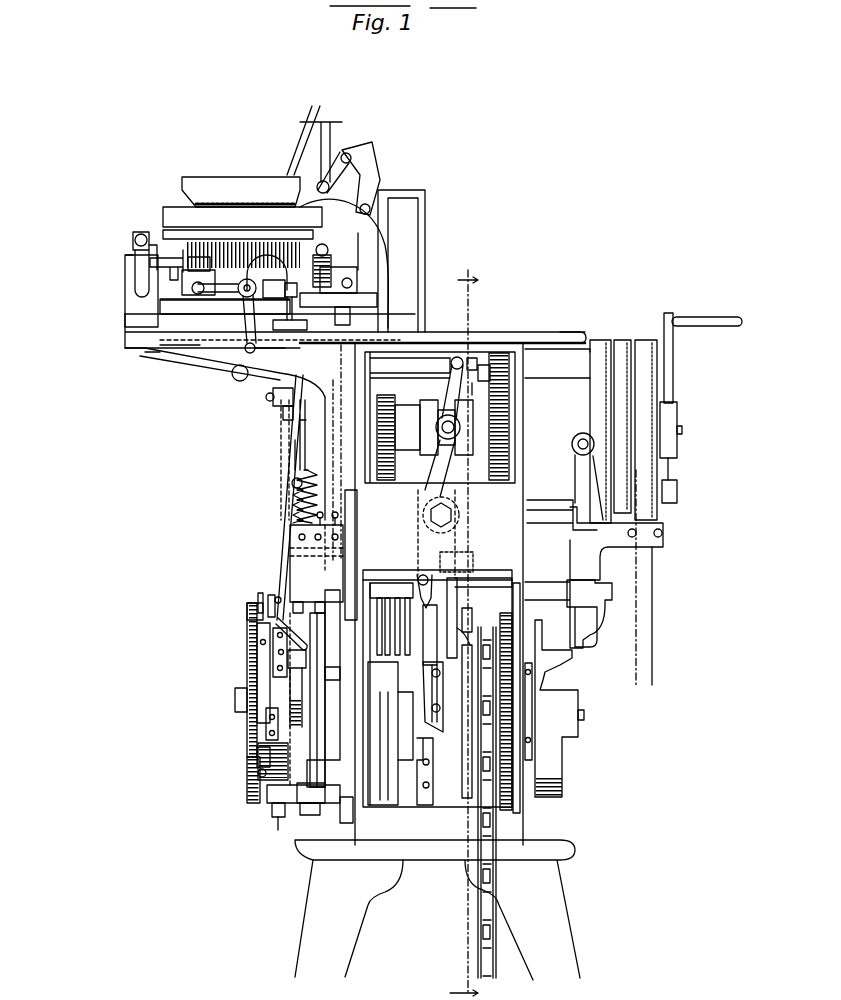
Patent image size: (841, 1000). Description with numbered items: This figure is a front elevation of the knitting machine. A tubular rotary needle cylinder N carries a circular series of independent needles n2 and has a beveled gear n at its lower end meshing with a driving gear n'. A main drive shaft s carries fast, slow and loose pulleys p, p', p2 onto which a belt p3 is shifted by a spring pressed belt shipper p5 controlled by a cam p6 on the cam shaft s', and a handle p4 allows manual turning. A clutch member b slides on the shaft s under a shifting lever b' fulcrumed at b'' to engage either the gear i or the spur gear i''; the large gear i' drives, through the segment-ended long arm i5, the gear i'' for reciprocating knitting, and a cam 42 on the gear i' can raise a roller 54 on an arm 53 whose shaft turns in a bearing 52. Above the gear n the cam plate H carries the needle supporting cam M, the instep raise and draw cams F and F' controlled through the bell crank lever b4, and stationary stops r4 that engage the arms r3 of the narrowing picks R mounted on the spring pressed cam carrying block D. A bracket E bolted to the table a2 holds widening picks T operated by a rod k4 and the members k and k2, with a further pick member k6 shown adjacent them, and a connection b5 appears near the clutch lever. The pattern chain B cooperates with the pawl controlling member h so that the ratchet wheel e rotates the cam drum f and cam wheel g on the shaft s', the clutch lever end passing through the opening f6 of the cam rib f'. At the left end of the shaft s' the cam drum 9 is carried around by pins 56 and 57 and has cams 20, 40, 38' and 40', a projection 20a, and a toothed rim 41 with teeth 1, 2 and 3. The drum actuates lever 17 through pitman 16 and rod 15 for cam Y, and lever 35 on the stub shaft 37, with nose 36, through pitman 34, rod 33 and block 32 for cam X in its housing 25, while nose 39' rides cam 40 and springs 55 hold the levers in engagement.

The independent needles n2 is at (240, 205).
The housing 25 is at (265, 283).
The needle cylinder N is at (230, 243).
The instep draw cam F' is at (171, 235).
The needle supporting cam M is at (243, 298).
The beveled gear n is at (199, 339).
The bell crank lever b4 is at (238, 378).
The widening picks T is at (183, 260).
The post k6 is at (133, 270).
The bracket E is at (123, 296).
The cam plate H is at (125, 315).
The table a2 is at (135, 331).
The rod k4 is at (130, 350).
The widening pick member k2 is at (165, 345).
The instep raise cam F is at (152, 369).
The cam carrying block D is at (378, 260).
The narrowing picks R is at (325, 270).
The arm r3 is at (353, 265).
The stationary stops r4 is at (352, 284).
The tooth 3 is at (222, 727).
The gear i is at (519, 416).
The clutch member b is at (427, 442).
The shifting lever b' is at (433, 455).
The fulcrum b'' is at (420, 532).
The pawl controlling member h is at (470, 600).
The bearing 52 is at (445, 370).
The arm 53 is at (440, 373).
The roller 54 is at (485, 380).
The large gear i' is at (543, 325).
The rod b5 is at (400, 340).
The cam 42 is at (558, 333).
The fast pulley p is at (604, 394).
The slow pulley p' is at (624, 403).
The loose pulley p2 is at (640, 340).
The handle p4 is at (705, 318).
The main drive shaft s is at (685, 452).
The belt shipper p5 is at (664, 540).
The belt p3 is at (655, 595).
The bracket d is at (525, 772).
The cam p6 is at (553, 742).
The cam shaft s' is at (599, 712).
The rack c is at (510, 800).
The pattern chain B is at (493, 910).
The cam wheel g is at (330, 815).
The cam drum f is at (388, 749).
The opening f6 is at (427, 715).
The ratchet wheel e is at (465, 750).
The cam rib f' is at (395, 908).
The long arm i5 is at (296, 490).
The rod 33 is at (275, 395).
The rod 15 is at (290, 407).
The block 32 is at (262, 358).
The pitman 34 is at (300, 420).
The driving gear n' is at (272, 455).
The pitman 16 is at (300, 470).
The spur gear i'' is at (277, 496).
The springs 55 is at (296, 522).
The widening pick member k is at (325, 605).
The lateral nose 39' is at (238, 596).
The depending nose 36 is at (257, 622).
The lever 35 is at (268, 618).
The cam 20 is at (275, 640).
The cam 40 is at (200, 680).
The stub shaft 37 is at (290, 655).
The projection 20a is at (237, 695).
The pin 56 is at (300, 695).
The pin 57 is at (263, 712).
The cam drum 9 is at (262, 752).
The toothed rim 41 is at (258, 748).
The tooth 2 is at (245, 765).
The cam 38' is at (205, 793).
The tooth 1 is at (265, 790).
The cam 40' is at (266, 841).
The lever 17 is at (312, 815).